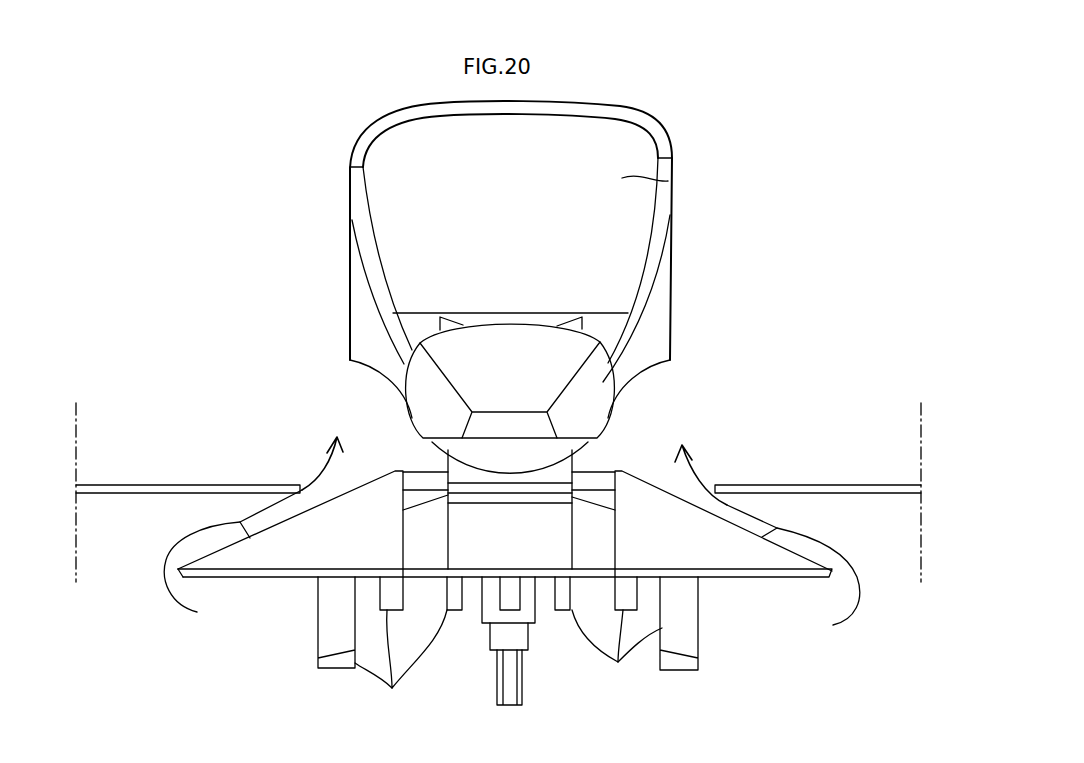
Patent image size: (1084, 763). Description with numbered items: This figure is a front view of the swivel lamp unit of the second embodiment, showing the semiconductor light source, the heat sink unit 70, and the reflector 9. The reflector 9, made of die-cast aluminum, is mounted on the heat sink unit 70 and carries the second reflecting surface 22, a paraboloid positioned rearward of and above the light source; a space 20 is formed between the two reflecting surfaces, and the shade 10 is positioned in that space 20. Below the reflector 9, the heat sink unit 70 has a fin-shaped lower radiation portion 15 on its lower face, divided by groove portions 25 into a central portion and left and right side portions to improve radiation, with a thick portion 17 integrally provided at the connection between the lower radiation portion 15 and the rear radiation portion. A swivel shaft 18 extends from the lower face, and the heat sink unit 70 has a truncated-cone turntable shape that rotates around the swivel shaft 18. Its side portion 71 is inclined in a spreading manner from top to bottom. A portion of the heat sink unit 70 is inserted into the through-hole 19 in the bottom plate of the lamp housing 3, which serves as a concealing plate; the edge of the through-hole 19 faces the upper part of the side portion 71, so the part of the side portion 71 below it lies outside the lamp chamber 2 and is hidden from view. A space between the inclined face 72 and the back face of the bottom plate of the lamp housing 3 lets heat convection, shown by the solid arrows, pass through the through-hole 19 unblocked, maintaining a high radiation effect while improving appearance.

The lamp chamber 2 is at (777, 359).
The lamp housing 3 is at (148, 485).
The reflector 9 is at (332, 230).
The shade 10 is at (570, 322).
The lower radiation portion 15 is at (508, 648).
The thick portion 17 is at (555, 488).
The swivel shaft 18 is at (523, 680).
The through-hole 19 is at (307, 483).
The space 20 is at (540, 312).
The second reflecting surface 22 is at (668, 181).
The groove portions 25 is at (422, 555).
The heat sink unit 70 is at (281, 598).
The side portion 71 is at (218, 560).
The inclined face 72 is at (240, 521).